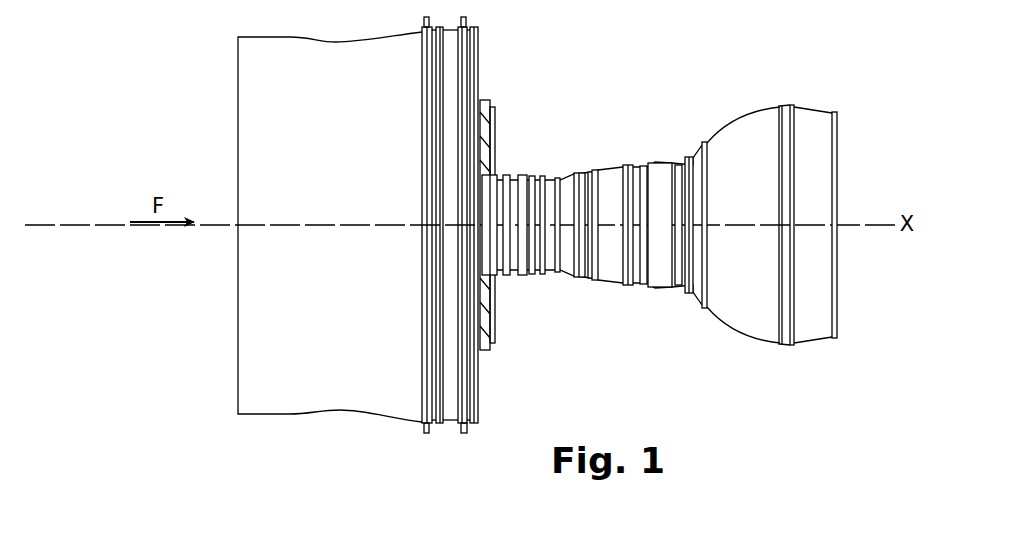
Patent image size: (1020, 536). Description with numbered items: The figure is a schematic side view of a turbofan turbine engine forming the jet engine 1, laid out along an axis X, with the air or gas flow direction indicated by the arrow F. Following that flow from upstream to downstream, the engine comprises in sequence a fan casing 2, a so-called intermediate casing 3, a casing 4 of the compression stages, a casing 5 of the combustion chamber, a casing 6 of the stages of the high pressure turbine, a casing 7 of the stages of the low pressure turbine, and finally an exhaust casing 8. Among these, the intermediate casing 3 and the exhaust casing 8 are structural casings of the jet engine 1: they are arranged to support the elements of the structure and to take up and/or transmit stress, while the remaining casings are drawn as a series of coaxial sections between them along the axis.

The jet engine 1 is at (621, 104).
The fan casing 2 is at (360, 388).
The intermediate casing 3 is at (454, 418).
The casing of the compression stages 4 is at (522, 290).
The casing of the combustion chamber 5 is at (580, 290).
The casing of the stages of the high pressure turbine 6 is at (657, 298).
The casing of the stages of the low pressure turbine 7 is at (745, 342).
The exhaust casing 8 is at (812, 313).